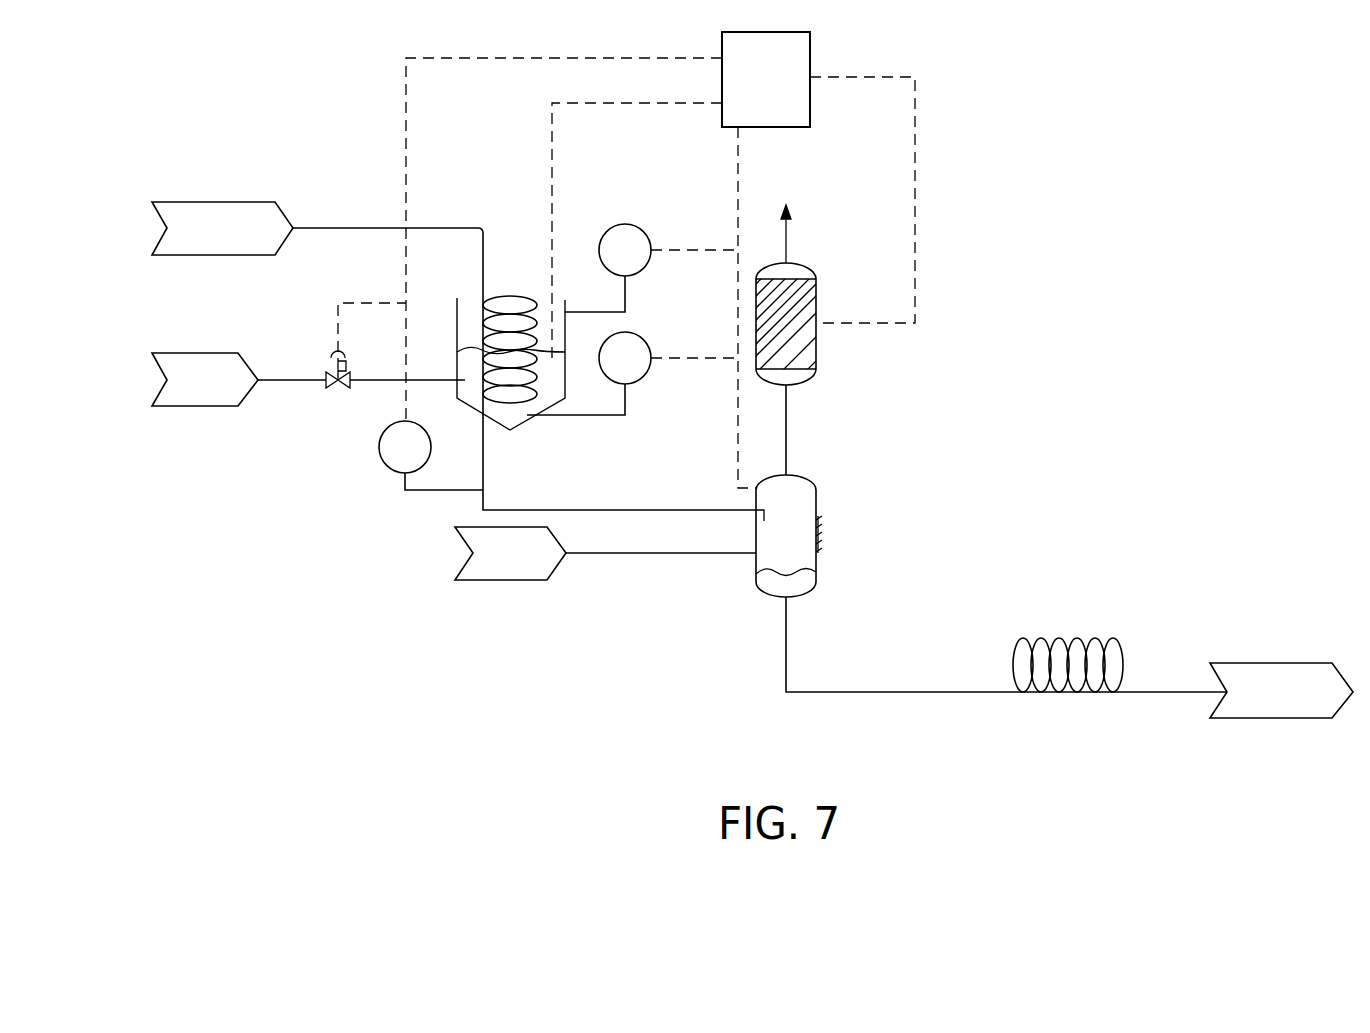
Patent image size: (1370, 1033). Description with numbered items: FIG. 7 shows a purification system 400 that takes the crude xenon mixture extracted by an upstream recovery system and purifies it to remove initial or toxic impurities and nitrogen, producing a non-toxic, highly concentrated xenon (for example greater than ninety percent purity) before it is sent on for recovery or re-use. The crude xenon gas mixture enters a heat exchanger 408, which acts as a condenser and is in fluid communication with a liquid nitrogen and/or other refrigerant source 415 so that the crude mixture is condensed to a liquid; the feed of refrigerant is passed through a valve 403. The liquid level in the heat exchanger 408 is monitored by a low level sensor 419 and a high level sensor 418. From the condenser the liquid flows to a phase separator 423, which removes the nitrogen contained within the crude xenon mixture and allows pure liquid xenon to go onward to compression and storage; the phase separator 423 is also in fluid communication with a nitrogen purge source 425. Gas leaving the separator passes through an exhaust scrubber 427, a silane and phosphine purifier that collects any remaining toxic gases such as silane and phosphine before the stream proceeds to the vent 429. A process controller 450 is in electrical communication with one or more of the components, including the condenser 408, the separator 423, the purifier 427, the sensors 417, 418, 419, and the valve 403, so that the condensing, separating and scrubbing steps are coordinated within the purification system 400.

The purification system 400 is at (1097, 147).
The valve 403 is at (338, 390).
The heat exchanger 408 is at (531, 363).
The liquid nitrogen and/or other refrigerant source 415 is at (215, 352).
The sensor 417 is at (381, 456).
The high level sensor 418 is at (646, 234).
The low level sensor 419 is at (645, 339).
The phase separator 423 is at (816, 508).
The nitrogen purge source 425 is at (510, 581).
The exhaust scrubber 427 is at (790, 355).
The vent 429 is at (801, 223).
The process controller 450 is at (766, 79).